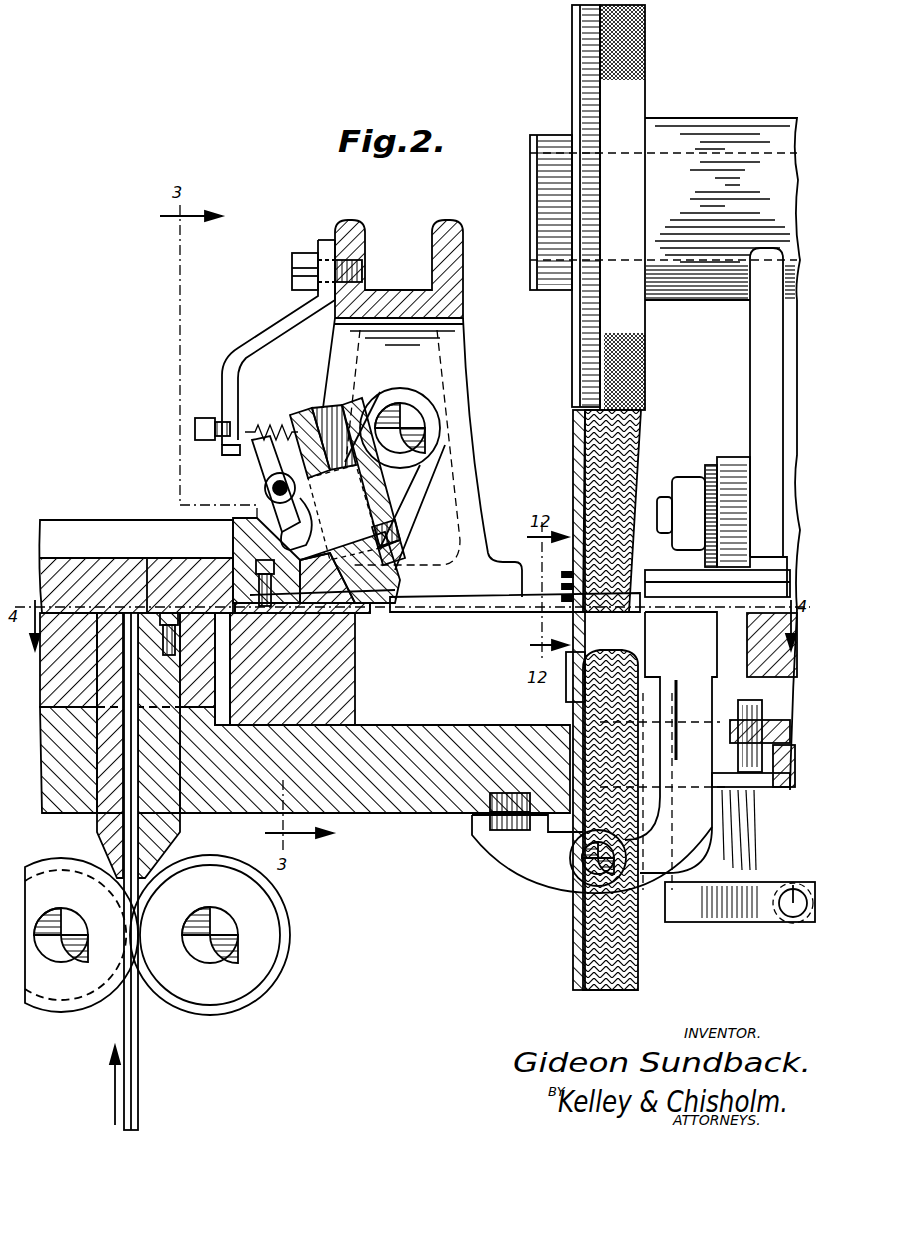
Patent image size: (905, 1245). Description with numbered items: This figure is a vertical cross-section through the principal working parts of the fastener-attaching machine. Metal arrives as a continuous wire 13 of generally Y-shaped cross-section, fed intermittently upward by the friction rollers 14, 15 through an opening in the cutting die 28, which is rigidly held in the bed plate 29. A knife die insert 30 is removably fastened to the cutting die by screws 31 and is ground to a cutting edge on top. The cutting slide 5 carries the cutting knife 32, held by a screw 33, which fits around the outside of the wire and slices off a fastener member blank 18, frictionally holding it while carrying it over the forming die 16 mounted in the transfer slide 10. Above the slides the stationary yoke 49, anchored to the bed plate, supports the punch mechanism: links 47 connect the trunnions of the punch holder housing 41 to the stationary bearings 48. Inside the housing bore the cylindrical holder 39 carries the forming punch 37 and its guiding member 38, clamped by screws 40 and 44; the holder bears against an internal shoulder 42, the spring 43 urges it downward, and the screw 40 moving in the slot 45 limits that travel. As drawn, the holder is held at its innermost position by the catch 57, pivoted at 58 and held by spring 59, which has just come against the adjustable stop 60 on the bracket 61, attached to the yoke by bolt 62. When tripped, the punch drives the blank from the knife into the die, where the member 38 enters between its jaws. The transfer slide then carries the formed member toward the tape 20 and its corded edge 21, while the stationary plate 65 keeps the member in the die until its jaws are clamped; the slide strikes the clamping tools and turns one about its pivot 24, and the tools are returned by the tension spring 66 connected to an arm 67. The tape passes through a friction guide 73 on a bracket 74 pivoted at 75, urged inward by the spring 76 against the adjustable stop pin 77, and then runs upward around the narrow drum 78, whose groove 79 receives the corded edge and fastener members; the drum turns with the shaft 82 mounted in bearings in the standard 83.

The cutting slide 5 is at (72, 556).
The transfer slide 10 is at (330, 712).
The wire 13 is at (138, 1090).
The friction roller 14 is at (63, 1005).
The friction roller 15 is at (210, 1005).
The forming die 16 is at (365, 612).
The fastener member blank 18 is at (565, 582).
The tape 20 is at (615, 990).
The corded edge 21 is at (574, 460).
The pivot 24 is at (680, 562).
The cutting die 28 is at (105, 845).
The bed plate 29 is at (398, 795).
The knife die insert 30 is at (168, 612).
The screw 31 is at (262, 566).
The cutting knife 32 is at (258, 585).
The screw 33 is at (235, 518).
The forming punch 37 is at (380, 580).
The guiding member 38 is at (330, 605).
The cylindrical holder 39 is at (365, 510).
The screw 40 is at (398, 528).
The punch holder housing 41 is at (385, 470).
The internal shoulder 42 is at (368, 420).
The spring 43 is at (335, 430).
The screw 44 is at (305, 420).
The slot 45 is at (403, 552).
The link 47 is at (430, 480).
The stationary bearing 48 is at (415, 422).
The stationary yoke 49 is at (460, 290).
The catch 57 is at (262, 455).
The pivot 58 is at (265, 485).
The spring 59 is at (268, 430).
The adjustable stop 60 is at (200, 417).
The bracket 61 is at (270, 328).
The bolt 62 is at (318, 262).
The stationary plate 65 is at (500, 613).
The tension spring 66 is at (793, 925).
The arm 67 is at (750, 920).
The friction guide 73 is at (590, 660).
The bracket 74 is at (690, 700).
The pivot 75 is at (590, 865).
The spring 76 is at (488, 820).
The adjustable stop pin 77 is at (770, 775).
The drum 78 is at (635, 90).
The groove 79 is at (585, 85).
The shaft 82 is at (530, 195).
The standard 83 is at (713, 125).